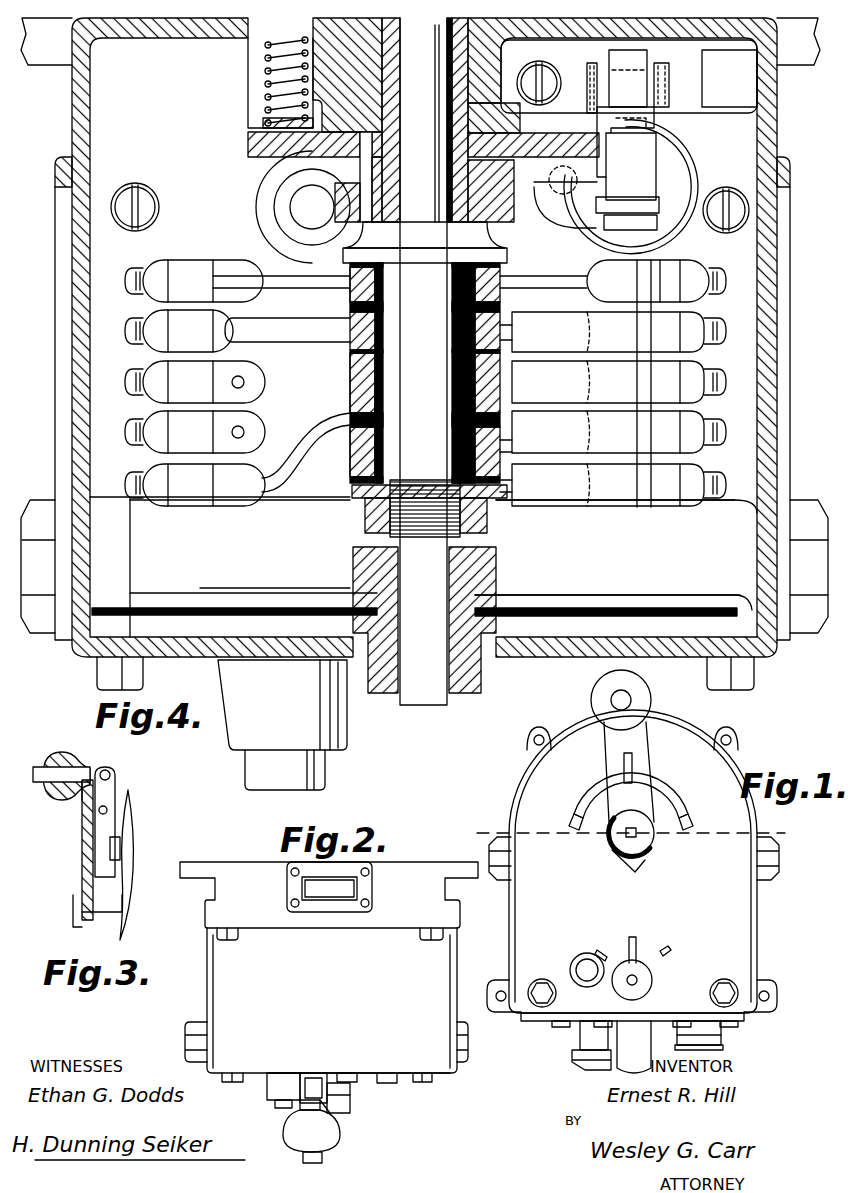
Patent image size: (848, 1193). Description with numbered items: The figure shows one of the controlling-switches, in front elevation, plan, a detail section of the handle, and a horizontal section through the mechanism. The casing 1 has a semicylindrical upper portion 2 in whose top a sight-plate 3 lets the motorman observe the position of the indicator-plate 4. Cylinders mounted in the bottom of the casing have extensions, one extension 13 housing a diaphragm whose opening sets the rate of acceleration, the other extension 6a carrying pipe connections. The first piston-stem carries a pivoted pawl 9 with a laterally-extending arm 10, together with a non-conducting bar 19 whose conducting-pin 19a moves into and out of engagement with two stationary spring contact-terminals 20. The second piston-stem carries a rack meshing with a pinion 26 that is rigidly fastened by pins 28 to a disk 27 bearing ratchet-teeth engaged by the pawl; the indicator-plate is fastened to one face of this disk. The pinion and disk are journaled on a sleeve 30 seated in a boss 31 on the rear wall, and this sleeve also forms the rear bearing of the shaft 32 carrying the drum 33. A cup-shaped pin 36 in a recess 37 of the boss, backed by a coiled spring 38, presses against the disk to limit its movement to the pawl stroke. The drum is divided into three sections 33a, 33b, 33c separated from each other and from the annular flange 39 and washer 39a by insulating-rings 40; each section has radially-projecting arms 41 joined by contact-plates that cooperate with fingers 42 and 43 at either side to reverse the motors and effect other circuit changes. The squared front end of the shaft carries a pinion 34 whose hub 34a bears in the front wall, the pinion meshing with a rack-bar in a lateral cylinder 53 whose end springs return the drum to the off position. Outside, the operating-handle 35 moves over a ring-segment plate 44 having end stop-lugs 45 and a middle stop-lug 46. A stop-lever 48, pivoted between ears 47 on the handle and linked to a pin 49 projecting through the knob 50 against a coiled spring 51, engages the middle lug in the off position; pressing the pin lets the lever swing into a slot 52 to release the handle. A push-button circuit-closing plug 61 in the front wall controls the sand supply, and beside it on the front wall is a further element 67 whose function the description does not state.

In FIG. 4, the casing 1 is at (424, 354).
In FIG. 1, the casing 1 is at (622, 926).
In FIG. 2, the casing 1 is at (329, 972).
In FIG. 1, the semicylindrical upper portion 2 is at (628, 861).
In FIG. 2, the sight-plate 3 is at (329, 887).
In FIG. 4, the indicator-plate 4 is at (629, 76).
In FIG. 1, the extension of cylinder 6 6a is at (578, 1040).
In FIG. 4, the pawl 9 is at (631, 180).
In FIG. 4, the laterally-extending arm 10 is at (565, 197).
In FIG. 1, the extension of cylinder 5 13 is at (721, 1036).
In FIG. 4, the non-conducting bar 19 is at (628, 78).
In FIG. 4, the conducting-pin 19a is at (684, 65).
In FIG. 4, the spring contact-terminals 20 is at (592, 75).
In FIG. 4, the pinion 26 is at (500, 222).
In FIG. 4, the disk 27 is at (248, 146).
In FIG. 4, the pins 28 is at (372, 222).
In FIG. 4, the sleeve 30 is at (400, 145).
In FIG. 4, the boss 31 is at (490, 67).
In FIG. 4, the shaft 32 is at (426, 361).
In FIG. 1, the shaft 32 is at (628, 840).
In FIG. 4, the drum 33 is at (350, 378).
In FIG. 4, the drum section 33a is at (386, 285).
In FIG. 4, the drum section 33b is at (386, 360).
In FIG. 4, the drum section 33c is at (386, 455).
In FIG. 4, the pinion 34 is at (498, 560).
In FIG. 4, the hub 34a is at (498, 590).
In FIG. 1, the operating-handle 35 is at (629, 797).
In FIG. 2, the operating-handle 35 is at (343, 1122).
In FIG. 3, the operating-handle 35 is at (65, 802).
In FIG. 4, the cup-shaped pin 36 is at (262, 92).
In FIG. 4, the recess 37 is at (262, 48).
In FIG. 4, the coiled spring 38 is at (262, 70).
In FIG. 4, the annular flange 39 is at (425, 242).
In FIG. 4, the washer 39a is at (352, 492).
In FIG. 4, the insulating-rings 40 is at (425, 373).
In FIG. 4, the radially-projecting arms 41 is at (312, 288).
In FIG. 4, the fingers 42 is at (182, 383).
In FIG. 4, the fingers 43 is at (722, 383).
In FIG. 1, the plate 44 is at (638, 793).
In FIG. 2, the plate 44 is at (365, 1078).
In FIG. 1, the stop-lugs 45 is at (578, 826).
In FIG. 2, the stop-lugs 45 is at (267, 1087).
In FIG. 2, the stop-lug 46 is at (350, 1090).
In FIG. 3, the stop-lug 46 is at (120, 848).
In FIG. 3, the lugs or ears 47 is at (110, 795).
In FIG. 3, the stop-lever 48 is at (118, 820).
In FIG. 3, the pin 49 is at (38, 765).
In FIG. 1, the knob 50 is at (632, 700).
In FIG. 2, the knob 50 is at (311, 1131).
In FIG. 3, the knob 50 is at (61, 758).
In FIG. 3, the coiled spring 51 is at (92, 765).
In FIG. 1, the slot 52 is at (632, 768).
In FIG. 3, the slot 52 is at (82, 850).
In FIG. 4, the cylinder 53 is at (432, 532).
In FIG. 4, the circuit-closing plug 61 is at (282, 725).
In FIG. 1, the circuit-closing plug 61 is at (585, 965).
In FIG. 2, the circuit-closing plug 61 is at (280, 1108).
In FIG. 1, the indicator 67 is at (640, 957).